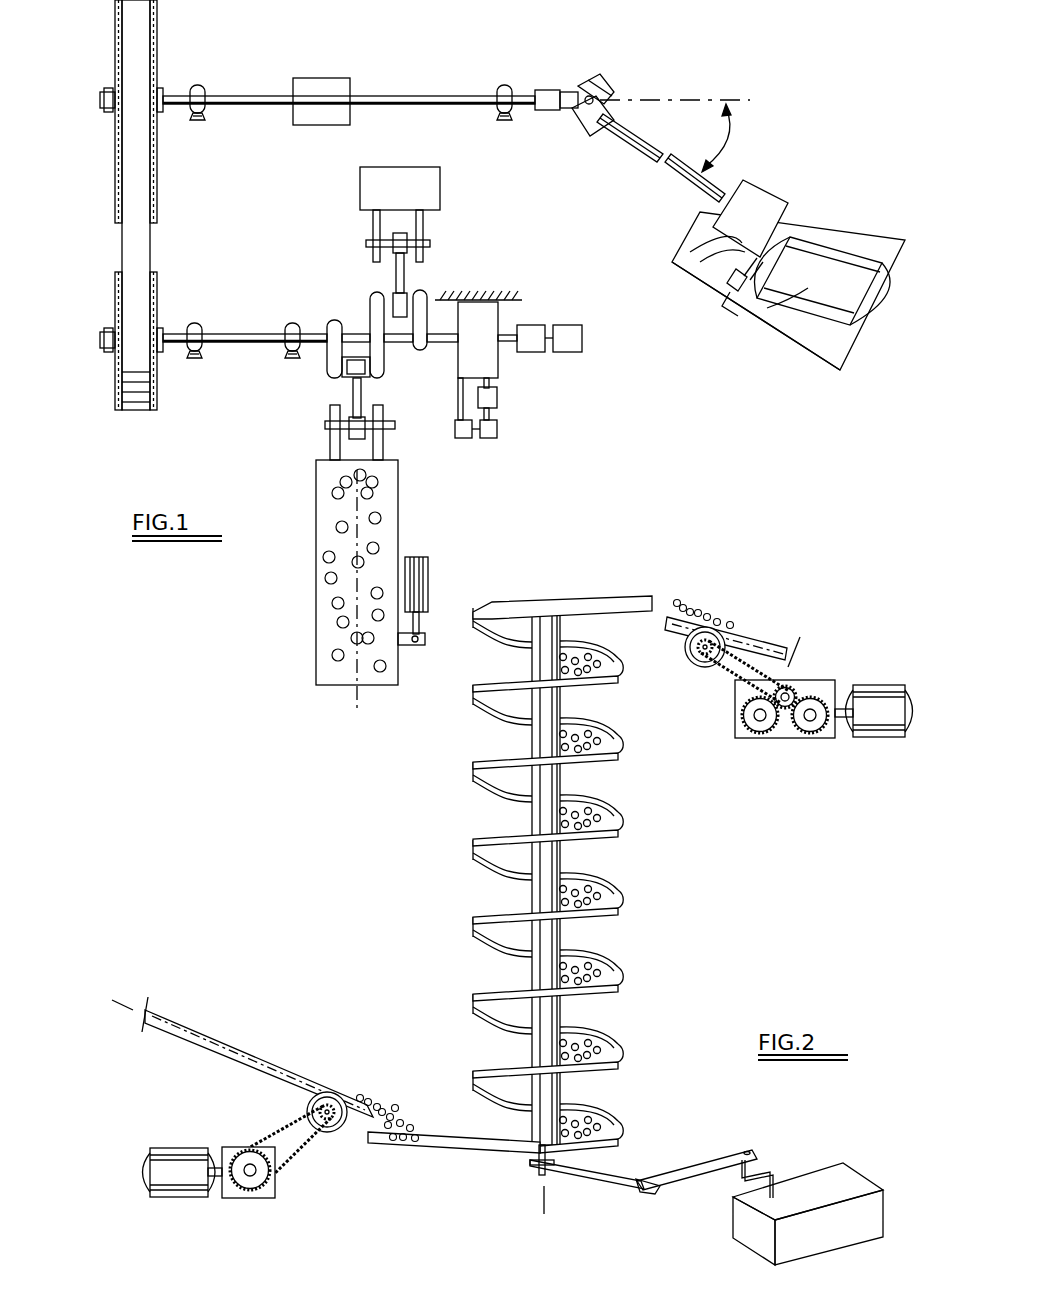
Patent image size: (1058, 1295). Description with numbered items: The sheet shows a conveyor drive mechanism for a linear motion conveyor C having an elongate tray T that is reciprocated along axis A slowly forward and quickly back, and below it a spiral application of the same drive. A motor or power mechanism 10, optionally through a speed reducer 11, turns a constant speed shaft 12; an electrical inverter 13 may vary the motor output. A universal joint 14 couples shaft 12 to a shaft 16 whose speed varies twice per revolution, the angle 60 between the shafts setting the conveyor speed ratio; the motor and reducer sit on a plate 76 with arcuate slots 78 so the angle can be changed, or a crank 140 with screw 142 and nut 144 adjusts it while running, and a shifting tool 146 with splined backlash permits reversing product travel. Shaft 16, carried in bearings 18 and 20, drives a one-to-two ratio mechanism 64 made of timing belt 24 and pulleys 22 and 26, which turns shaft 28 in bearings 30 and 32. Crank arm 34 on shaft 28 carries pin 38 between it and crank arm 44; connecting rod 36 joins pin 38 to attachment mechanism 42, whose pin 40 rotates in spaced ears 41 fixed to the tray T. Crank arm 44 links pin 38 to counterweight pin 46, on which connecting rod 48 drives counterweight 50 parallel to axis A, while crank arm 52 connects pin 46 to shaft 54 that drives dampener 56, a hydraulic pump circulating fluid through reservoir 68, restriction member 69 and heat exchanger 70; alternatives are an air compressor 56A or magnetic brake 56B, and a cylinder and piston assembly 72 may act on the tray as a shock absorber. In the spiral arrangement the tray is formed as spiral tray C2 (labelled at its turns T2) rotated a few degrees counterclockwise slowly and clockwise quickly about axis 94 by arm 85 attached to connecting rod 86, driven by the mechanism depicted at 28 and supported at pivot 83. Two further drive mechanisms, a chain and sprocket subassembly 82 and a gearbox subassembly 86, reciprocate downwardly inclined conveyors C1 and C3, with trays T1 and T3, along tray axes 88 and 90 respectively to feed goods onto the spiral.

In FIG. 1, the power mechanism 10 is at (835, 252).
In FIG. 1, the speed reducer 11 is at (770, 210).
In FIG. 1, the constant rotational speed shaft 12 is at (650, 150).
In FIG. 1, the electrical inverter 13 is at (810, 338).
In FIG. 1, the universal joint 14 is at (600, 90).
In FIG. 1, the variable speed shaft 16 is at (437, 100).
In FIG. 1, the bearing 18 is at (506, 90).
In FIG. 1, the bearing 20 is at (200, 95).
In FIG. 1, the pulley 22 is at (157, 30).
In FIG. 1, the timing belt 24 is at (138, 252).
In FIG. 1, the pulley 26 is at (158, 280).
In FIG. 1, the shaft 28 is at (265, 342).
In FIG. 2, the shaft 28 is at (740, 1250).
In FIG. 1, the bearing 30 is at (194, 352).
In FIG. 1, the bearing 32 is at (290, 330).
In FIG. 1, the crank arm 34 is at (332, 358).
In FIG. 1, the connecting rod 36 is at (360, 408).
In FIG. 1, the pin 38 is at (352, 360).
In FIG. 1, the pin 40 is at (330, 425).
In FIG. 1, the spaced ears 41 is at (382, 448).
In FIG. 1, the attachment mechanism 42 is at (312, 450).
In FIG. 1, the crank arm 44 is at (376, 325).
In FIG. 1, the counterweight pin 46 is at (396, 318).
In FIG. 1, the connecting rod 48 is at (397, 283).
In FIG. 1, the counterweight 50 is at (395, 197).
In FIG. 1, the crank arm 52 is at (418, 300).
In FIG. 1, the shaft 54 is at (433, 344).
In FIG. 1, the dampener 56 is at (497, 322).
In FIG. 1, the air compressor 56A is at (530, 345).
In FIG. 1, the magnetic brake 56B is at (565, 340).
In FIG. 1, the angle 60 is at (731, 112).
In FIG. 1, the 1:2 ratio mechanism 64 is at (185, 205).
In FIG. 1, the reservoir 68 is at (462, 440).
In FIG. 1, the restriction member 69 is at (490, 398).
In FIG. 1, the heat exchanger 70 is at (495, 430).
In FIG. 1, the hydraulic cylinder and piston assembly 72 is at (415, 567).
In FIG. 1, the plate 76 is at (822, 345).
In FIG. 1, the arcuate slots 78 is at (697, 256).
In FIG. 2, the conveyor drive mechanism 82 is at (265, 1197).
In FIG. 2, the tray pin 83 is at (538, 1165).
In FIG. 2, the arm 85 is at (618, 1186).
In FIG. 2, the connecting rod / conveyor drive mechanism 86 is at (720, 1163).
In FIG. 2, the tray axis 88 is at (308, 1080).
In FIG. 2, the tray axis 90 is at (785, 650).
In FIG. 2, the axis 94 is at (544, 1204).
In FIG. 1, the crank 140 is at (723, 312).
In FIG. 1, the screw 142 is at (755, 285).
In FIG. 1, the nut 144 is at (728, 280).
In FIG. 1, the shifting tool 146 is at (318, 95).
In FIG. 1, the tray T is at (382, 510).
In FIG. 1, the conveyor C is at (282, 592).
In FIG. 1, the axis A is at (362, 692).
In FIG. 2, the tray 1 T1 is at (256, 1050).
In FIG. 2, the tray 2 T2 is at (608, 880).
In FIG. 2, the tray 3 T3 is at (746, 633).
In FIG. 2, the reciprocating conveyor C1 is at (178, 1080).
In FIG. 2, the spiral tray C2 is at (640, 820).
In FIG. 2, the reciprocating conveyor C3 is at (680, 672).